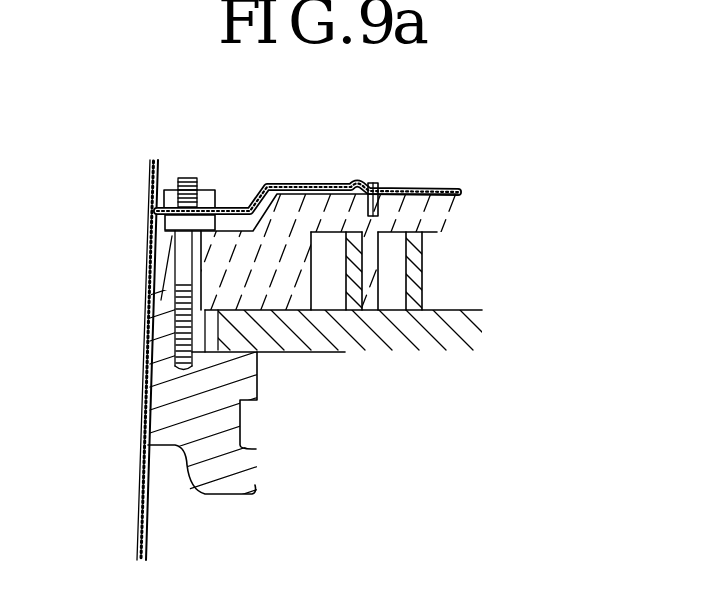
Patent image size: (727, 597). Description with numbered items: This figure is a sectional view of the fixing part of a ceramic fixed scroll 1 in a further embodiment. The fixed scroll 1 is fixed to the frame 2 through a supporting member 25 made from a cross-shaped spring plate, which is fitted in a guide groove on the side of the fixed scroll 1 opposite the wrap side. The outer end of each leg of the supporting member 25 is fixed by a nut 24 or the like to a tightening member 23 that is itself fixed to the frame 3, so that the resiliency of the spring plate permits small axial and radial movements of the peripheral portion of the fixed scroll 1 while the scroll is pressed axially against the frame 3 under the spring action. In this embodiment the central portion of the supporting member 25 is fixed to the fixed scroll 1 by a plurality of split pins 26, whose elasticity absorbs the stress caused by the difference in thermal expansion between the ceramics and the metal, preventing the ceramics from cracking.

The fixed scroll 1 is at (420, 200).
The frame 2 is at (305, 332).
The frame 3 is at (220, 470).
The tightening member 23 is at (152, 226).
The nut 24 is at (150, 177).
The supporting member 25 is at (290, 181).
The split pin 26 is at (373, 182).